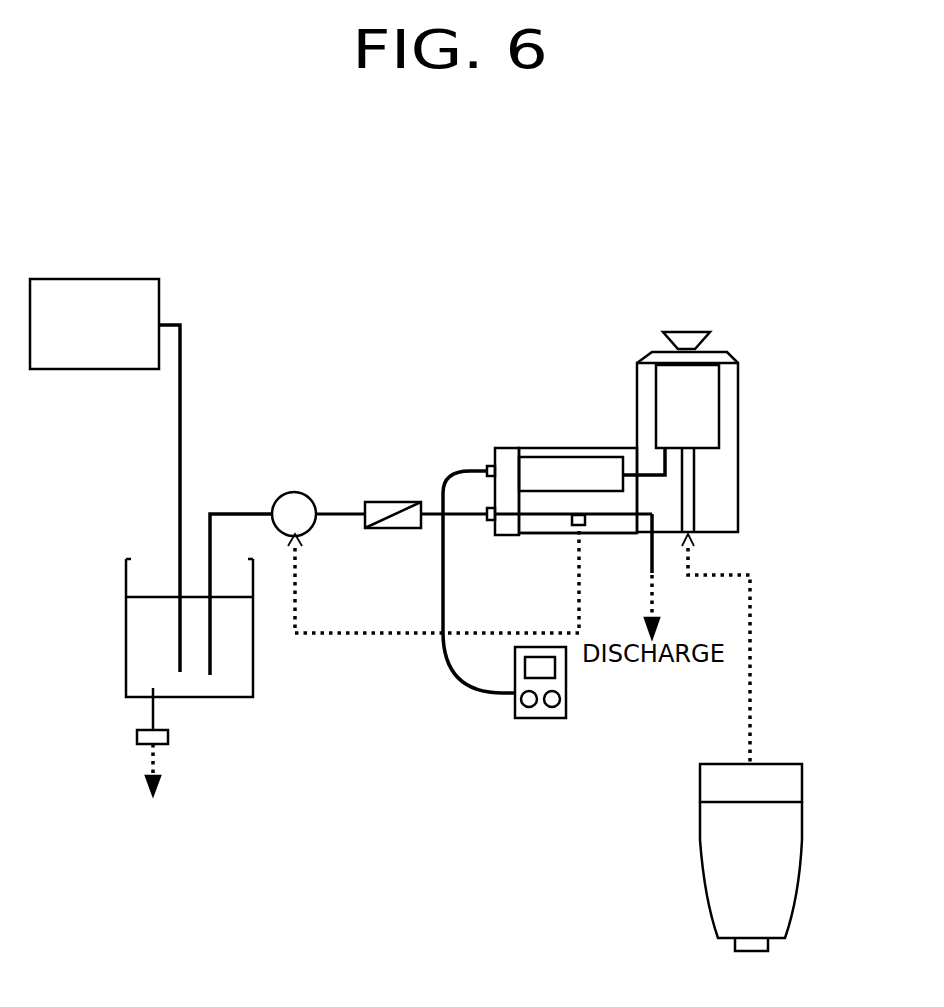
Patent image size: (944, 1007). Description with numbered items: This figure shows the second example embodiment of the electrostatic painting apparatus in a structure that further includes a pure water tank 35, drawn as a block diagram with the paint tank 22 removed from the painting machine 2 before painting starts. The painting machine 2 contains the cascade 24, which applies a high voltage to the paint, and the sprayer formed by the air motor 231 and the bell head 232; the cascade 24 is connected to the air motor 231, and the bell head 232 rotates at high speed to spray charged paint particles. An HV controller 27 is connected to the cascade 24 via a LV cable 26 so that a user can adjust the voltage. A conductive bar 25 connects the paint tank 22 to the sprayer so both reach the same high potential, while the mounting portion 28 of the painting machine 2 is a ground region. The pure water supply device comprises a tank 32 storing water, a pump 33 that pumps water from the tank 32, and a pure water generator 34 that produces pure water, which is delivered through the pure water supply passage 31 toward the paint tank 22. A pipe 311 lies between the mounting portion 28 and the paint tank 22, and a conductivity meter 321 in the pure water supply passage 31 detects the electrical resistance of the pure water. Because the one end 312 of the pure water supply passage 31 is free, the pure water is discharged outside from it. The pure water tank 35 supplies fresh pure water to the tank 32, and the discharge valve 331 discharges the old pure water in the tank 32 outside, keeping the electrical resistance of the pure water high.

The painting machine 2 is at (738, 375).
The paint tank 22 is at (700, 818).
The air motor 231 is at (719, 418).
The bell head 232 is at (712, 336).
The cascade 24 is at (583, 465).
The conductive bar 25 is at (694, 508).
The LV cable 26 is at (485, 692).
The HV controller 27 is at (566, 675).
The mounting portion 28 is at (505, 447).
The pure water supply passage 31 is at (466, 516).
The pipe 311 is at (623, 520).
The one end 312 is at (660, 580).
The tank 32 is at (253, 660).
The conductivity meter 321 is at (582, 527).
The pump 33 is at (323, 482).
The discharge valve 331 is at (168, 737).
The pure water generator 34 is at (398, 497).
The pure water tank 35 is at (112, 277).